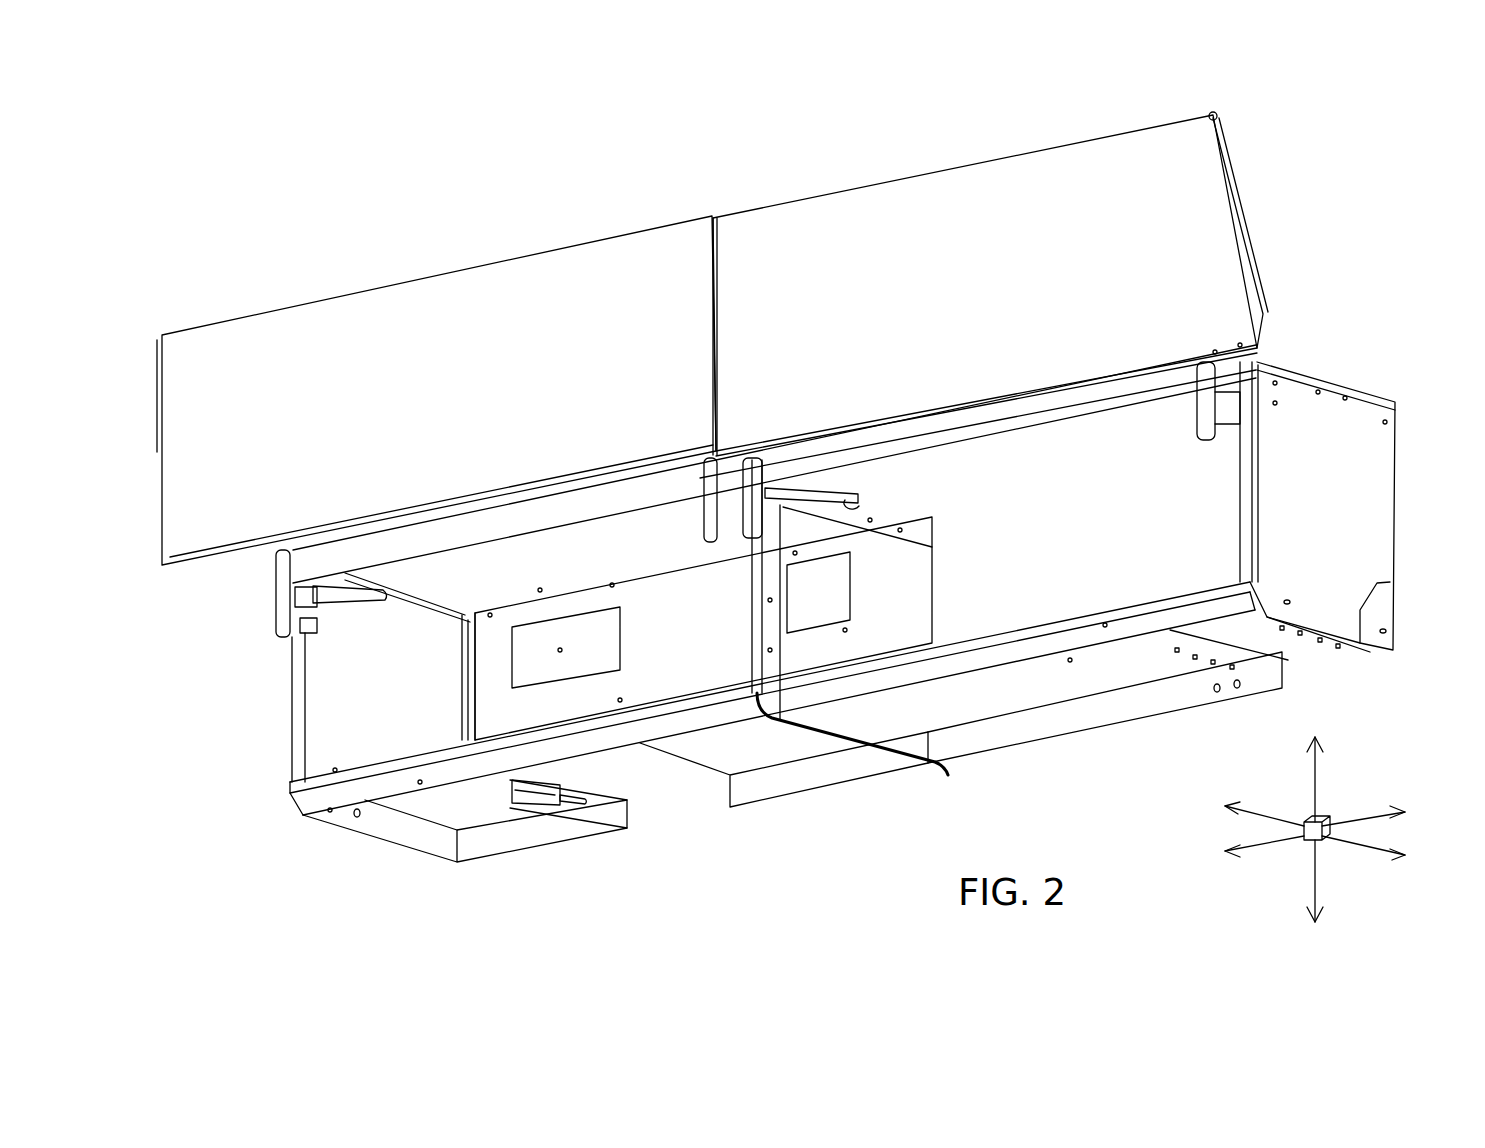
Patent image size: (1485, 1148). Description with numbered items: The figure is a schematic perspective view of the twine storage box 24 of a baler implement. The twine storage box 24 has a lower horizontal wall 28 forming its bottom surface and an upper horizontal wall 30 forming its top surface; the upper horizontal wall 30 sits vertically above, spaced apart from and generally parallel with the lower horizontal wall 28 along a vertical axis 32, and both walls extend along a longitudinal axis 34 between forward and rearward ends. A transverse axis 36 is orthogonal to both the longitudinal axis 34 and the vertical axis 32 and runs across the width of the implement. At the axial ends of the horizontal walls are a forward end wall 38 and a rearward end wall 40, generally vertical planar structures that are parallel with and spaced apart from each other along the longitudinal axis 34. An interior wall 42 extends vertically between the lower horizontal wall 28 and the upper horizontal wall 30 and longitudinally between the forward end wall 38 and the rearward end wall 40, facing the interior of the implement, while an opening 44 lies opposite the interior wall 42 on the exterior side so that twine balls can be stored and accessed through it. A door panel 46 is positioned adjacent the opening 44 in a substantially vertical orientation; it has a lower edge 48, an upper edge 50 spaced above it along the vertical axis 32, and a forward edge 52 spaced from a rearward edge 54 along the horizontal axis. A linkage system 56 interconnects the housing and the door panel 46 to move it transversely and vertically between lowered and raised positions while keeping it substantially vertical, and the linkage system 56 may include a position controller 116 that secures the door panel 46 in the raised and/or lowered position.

The twine storage box 24 is at (500, 148).
The lower horizontal wall 28 is at (980, 690).
The upper horizontal wall 30 is at (997, 460).
The vertical axis 32 is at (1296, 808).
The longitudinal axis 34 is at (1350, 815).
The transverse axis 36 is at (1355, 855).
The forward end wall 38 is at (1335, 518).
The rearward end wall 40 is at (297, 708).
The interior wall 42 is at (692, 646).
The opening 44 is at (610, 690).
The door panel 46 is at (852, 180).
The lower edge 48 is at (915, 415).
The upper edge 50 is at (790, 190).
The forward edge 52 is at (1247, 235).
The rearward edge 54 is at (158, 455).
The linkage system 56 is at (268, 607).
The position controller 116 is at (355, 602).